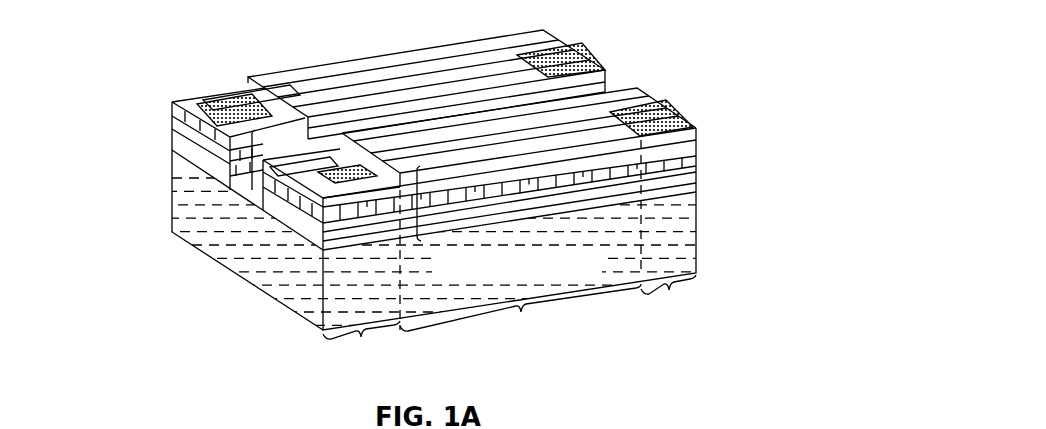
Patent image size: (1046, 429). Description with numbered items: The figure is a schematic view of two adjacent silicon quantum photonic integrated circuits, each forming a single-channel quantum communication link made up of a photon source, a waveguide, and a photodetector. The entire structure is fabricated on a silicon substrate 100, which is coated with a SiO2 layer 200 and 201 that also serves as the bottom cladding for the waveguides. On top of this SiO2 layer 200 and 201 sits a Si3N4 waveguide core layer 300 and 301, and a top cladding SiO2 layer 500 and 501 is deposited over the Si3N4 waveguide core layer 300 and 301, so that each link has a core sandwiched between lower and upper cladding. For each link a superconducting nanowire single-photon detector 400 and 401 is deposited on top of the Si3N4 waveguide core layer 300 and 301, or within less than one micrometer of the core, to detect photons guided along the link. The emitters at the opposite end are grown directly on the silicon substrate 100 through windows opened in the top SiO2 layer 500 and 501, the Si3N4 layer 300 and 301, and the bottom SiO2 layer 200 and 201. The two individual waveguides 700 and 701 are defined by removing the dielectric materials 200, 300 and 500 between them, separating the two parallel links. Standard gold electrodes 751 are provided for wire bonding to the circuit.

The silicon substrate 100 is at (688, 253).
The SiO2 layer 200 is at (690, 183).
The Si3N4 waveguide core layer 300 is at (690, 161).
The top cladding SiO2 layer 500 is at (688, 143).
The top cladding SiO2 layer 501 is at (313, 73).
The Si3N4 waveguide core layer 301 is at (170, 119).
The SiO2 layer 201 is at (176, 146).
The Au electrode 751 is at (197, 104).
The superconducting nanowire single-photon detector 401 is at (252, 108).
The superconducting nanowire single-photon detector 400 is at (300, 162).
The waveguide 700 is at (328, 196).
The waveguide 701 is at (240, 163).